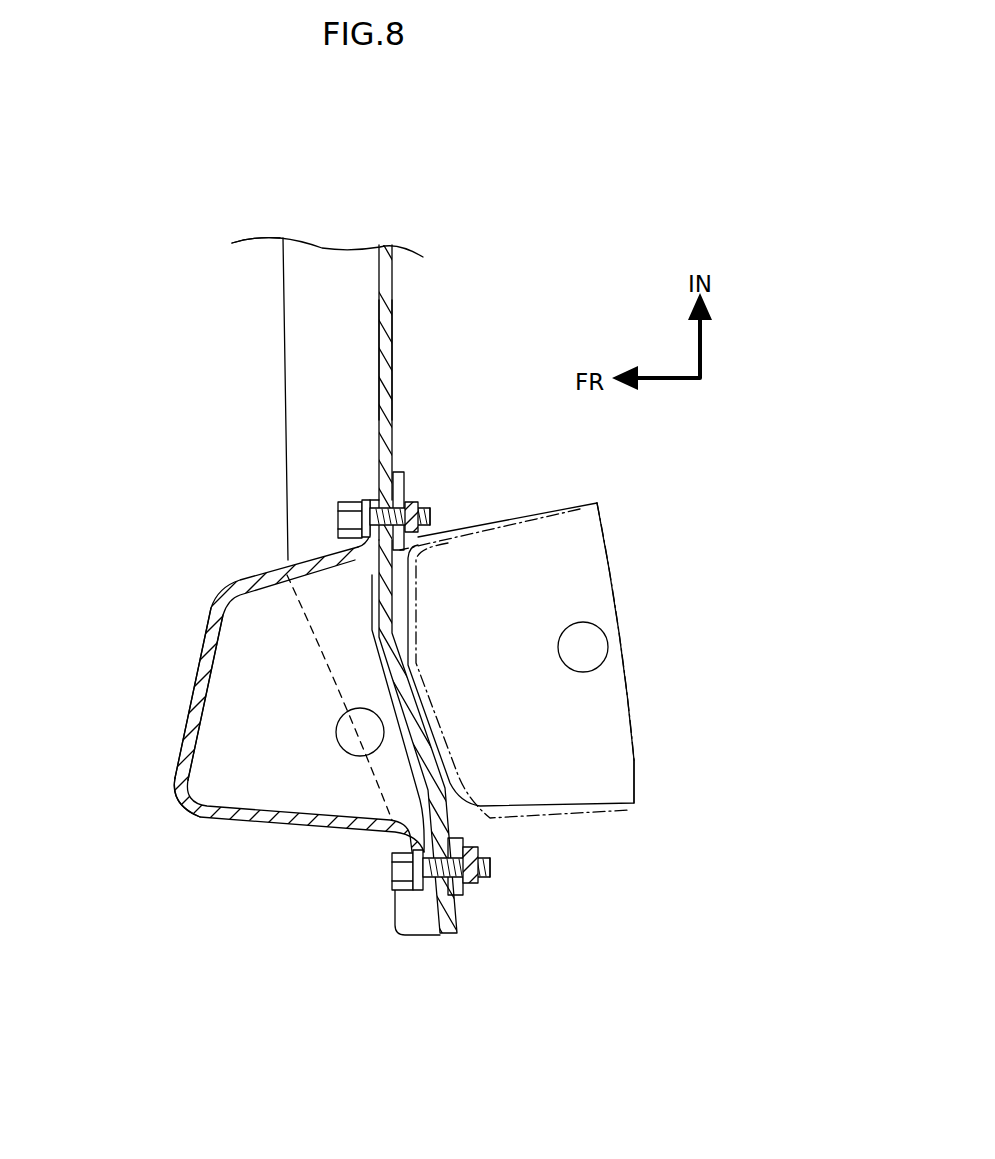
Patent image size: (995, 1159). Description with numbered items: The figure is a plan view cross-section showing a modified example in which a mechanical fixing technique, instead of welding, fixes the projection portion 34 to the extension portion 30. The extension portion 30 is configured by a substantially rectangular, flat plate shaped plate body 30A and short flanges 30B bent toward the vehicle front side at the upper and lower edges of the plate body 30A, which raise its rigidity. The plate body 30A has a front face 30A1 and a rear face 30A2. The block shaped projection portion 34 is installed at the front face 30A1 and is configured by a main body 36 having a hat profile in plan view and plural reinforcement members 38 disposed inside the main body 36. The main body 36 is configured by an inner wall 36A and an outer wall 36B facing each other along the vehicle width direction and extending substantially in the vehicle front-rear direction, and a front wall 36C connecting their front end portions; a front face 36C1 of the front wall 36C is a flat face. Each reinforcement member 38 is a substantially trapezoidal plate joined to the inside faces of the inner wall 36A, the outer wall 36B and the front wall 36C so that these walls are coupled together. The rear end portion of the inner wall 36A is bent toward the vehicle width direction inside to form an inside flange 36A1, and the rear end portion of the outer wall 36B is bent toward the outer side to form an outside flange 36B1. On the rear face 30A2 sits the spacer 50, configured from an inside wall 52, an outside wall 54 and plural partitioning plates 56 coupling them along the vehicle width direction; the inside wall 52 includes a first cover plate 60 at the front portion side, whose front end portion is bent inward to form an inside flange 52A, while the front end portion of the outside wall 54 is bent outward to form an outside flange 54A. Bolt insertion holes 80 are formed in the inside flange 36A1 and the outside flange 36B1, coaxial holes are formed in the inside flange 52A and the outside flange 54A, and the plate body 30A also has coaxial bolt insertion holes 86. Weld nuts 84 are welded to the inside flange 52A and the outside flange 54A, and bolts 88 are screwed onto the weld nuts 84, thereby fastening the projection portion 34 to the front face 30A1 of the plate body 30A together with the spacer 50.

The extension portion 30 is at (400, 220).
The plate body 30A is at (398, 325).
The front face 30A1 is at (378, 363).
The rear face 30A2 is at (392, 378).
The flange 30B is at (290, 297).
The projection portion 34 is at (165, 823).
The main body 36 is at (421, 706).
The inner wall 36A is at (305, 671).
The inside flange 36A1 is at (370, 500).
The outer wall 36B is at (421, 741).
The outside flange 36B1 is at (428, 890).
The front wall 36C is at (211, 663).
The front face 36C1 is at (200, 655).
The reinforcement member 38 is at (247, 797).
The spacer 50 is at (648, 809).
The inside wall 52 is at (615, 631).
The inside flange 52A is at (400, 468).
The outside wall 54 is at (607, 814).
The outside flange 54A is at (460, 895).
The partitioning plate 56 is at (634, 760).
The first cover plate 60 is at (575, 698).
The bolt insertion hole 80 is at (358, 712).
The weld nut 84 is at (423, 505).
The bolt insertion hole 86 is at (430, 515).
The bolt 88 is at (338, 526).